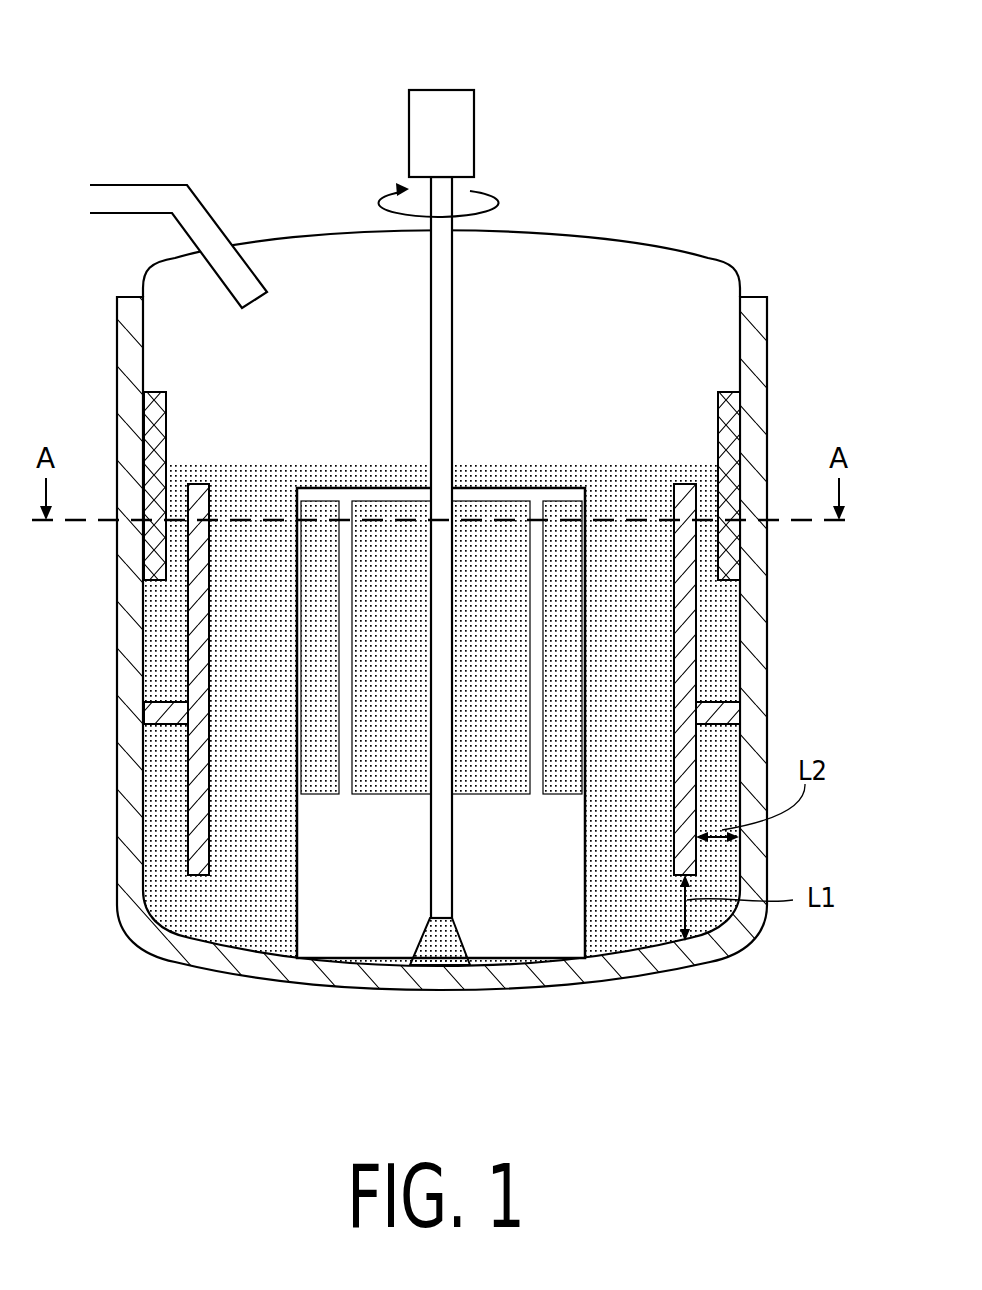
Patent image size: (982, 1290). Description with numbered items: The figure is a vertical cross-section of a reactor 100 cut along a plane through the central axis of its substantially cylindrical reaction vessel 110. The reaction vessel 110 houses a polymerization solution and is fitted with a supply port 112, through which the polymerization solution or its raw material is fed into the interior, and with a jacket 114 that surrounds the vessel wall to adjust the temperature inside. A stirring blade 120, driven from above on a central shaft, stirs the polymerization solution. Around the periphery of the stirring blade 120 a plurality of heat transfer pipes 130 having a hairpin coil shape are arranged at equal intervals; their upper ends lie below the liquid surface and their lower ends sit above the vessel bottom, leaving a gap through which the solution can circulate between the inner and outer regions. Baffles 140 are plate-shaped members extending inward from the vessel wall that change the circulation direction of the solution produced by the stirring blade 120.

The reactor 100 is at (117, 38).
The reaction vessel 110 is at (336, 152).
The supply port 112 is at (168, 183).
The jacket 114 is at (117, 312).
The stirring blade 120 is at (502, 945).
The heat transfer pipes 130 is at (186, 673).
The baffles 140 is at (144, 567).